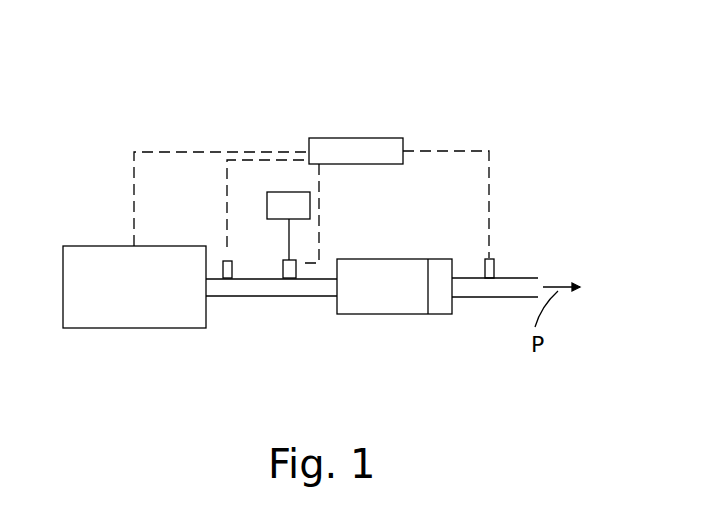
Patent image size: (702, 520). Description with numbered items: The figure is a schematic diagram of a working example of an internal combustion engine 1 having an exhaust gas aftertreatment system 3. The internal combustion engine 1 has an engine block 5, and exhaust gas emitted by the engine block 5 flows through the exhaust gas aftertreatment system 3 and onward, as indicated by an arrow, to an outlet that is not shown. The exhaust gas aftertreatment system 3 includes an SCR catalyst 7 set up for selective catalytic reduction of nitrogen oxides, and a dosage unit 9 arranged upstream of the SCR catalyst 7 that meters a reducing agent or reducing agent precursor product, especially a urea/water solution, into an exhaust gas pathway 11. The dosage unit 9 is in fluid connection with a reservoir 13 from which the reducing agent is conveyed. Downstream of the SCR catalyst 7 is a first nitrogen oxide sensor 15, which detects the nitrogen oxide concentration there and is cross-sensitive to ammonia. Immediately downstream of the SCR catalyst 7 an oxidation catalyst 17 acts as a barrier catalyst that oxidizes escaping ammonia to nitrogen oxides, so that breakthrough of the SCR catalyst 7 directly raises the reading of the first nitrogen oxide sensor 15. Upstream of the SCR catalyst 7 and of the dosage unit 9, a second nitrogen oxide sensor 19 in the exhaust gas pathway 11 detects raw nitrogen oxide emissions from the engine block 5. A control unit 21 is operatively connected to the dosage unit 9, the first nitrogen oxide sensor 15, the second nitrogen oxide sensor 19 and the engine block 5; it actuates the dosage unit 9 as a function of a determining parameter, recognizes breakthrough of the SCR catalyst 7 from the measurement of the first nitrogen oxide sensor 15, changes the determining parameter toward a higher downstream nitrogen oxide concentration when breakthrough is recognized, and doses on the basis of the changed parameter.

The internal combustion engine 1 is at (470, 84).
The exhaust gas aftertreatment system 3 is at (282, 355).
The engine block 5 is at (127, 328).
The SCR catalyst 7 is at (378, 314).
The dosage unit 9 is at (281, 266).
The exhaust gas pathway 11 is at (240, 315).
The reservoir 13 is at (288, 190).
The first nitrogen oxide sensor 15 is at (495, 268).
The oxidation catalyst 17 is at (438, 314).
The second nitrogen oxide sensor 19 is at (226, 258).
The control unit 21 is at (362, 138).